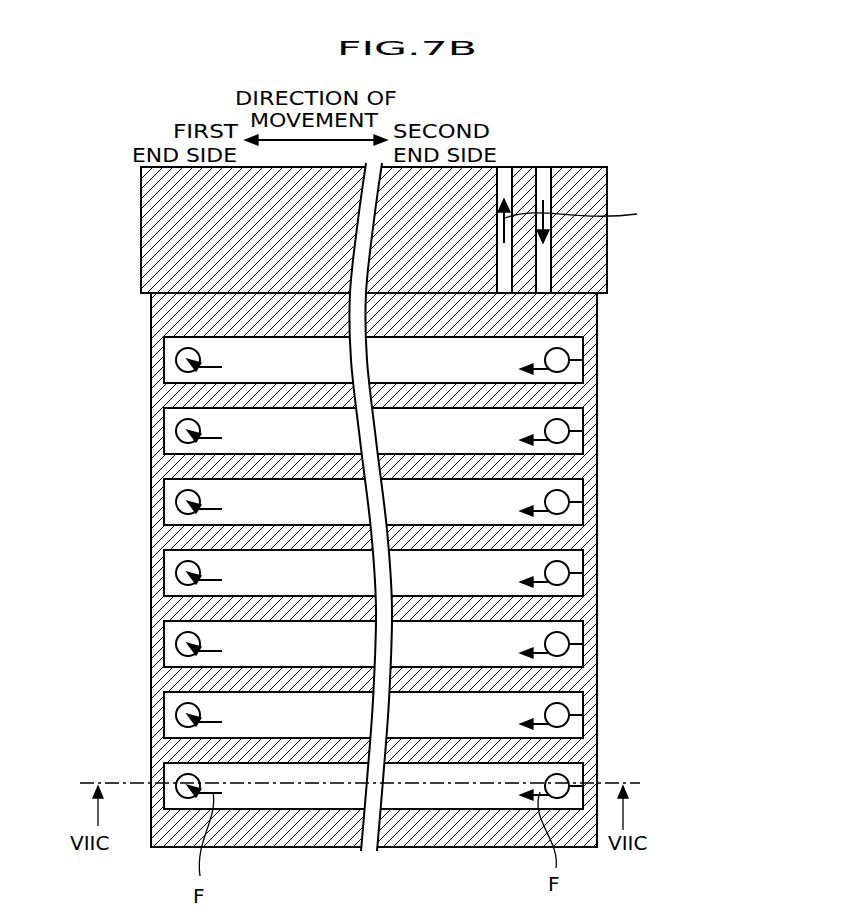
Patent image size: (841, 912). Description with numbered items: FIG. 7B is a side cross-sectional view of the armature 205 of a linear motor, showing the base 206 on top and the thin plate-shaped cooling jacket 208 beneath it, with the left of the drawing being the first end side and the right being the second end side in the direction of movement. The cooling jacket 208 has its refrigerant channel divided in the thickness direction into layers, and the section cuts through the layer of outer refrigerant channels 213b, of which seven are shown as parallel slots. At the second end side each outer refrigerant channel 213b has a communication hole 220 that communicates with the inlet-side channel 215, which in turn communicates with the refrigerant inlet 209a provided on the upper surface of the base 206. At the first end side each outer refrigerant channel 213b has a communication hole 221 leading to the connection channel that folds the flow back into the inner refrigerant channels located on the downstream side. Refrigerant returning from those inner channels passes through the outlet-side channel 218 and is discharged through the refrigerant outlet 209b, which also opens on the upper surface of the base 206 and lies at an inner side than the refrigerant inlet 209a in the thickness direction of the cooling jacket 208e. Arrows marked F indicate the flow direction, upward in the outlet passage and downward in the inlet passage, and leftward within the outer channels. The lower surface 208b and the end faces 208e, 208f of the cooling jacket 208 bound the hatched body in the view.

The armature 205 is at (381, 491).
The base 206 is at (141, 222).
The cooling jacket 208 is at (147, 842).
The bottom surface of guide body 208b is at (268, 848).
The cooling jacket 208e is at (597, 317).
The first end surface of guide body 208f is at (151, 307).
The refrigerant inlet 209a is at (551, 178).
The refrigerant outlet 209b is at (512, 178).
The outer refrigerant channels 213b is at (525, 772).
The inlet-side channel 215 is at (545, 274).
The outlet-side channel 218 is at (503, 253).
The communication hole 220 is at (583, 365).
The communication hole 221 is at (142, 562).